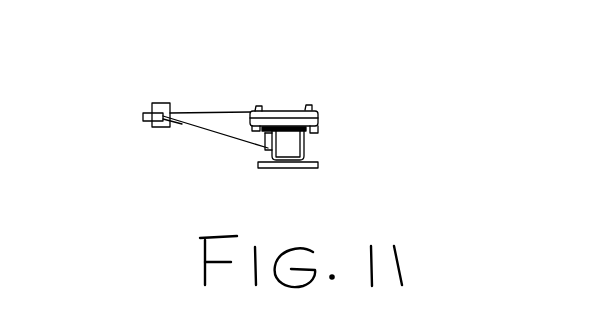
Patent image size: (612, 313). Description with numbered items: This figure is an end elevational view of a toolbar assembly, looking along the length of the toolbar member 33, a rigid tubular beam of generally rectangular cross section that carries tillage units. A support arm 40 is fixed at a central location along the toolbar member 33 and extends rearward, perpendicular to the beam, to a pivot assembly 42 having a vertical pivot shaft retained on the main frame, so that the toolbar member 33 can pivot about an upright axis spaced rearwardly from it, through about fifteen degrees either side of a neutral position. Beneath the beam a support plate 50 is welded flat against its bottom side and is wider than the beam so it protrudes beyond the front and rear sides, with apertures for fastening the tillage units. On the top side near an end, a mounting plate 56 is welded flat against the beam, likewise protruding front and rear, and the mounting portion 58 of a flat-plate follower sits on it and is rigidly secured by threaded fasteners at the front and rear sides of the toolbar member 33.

The toolbar member 33 is at (308, 153).
The support arm 40 is at (215, 122).
The pivot assembly 42 is at (158, 103).
The support plate 50 is at (312, 168).
The mounting plate 56 is at (318, 128).
The mounting portion 58 is at (315, 110).